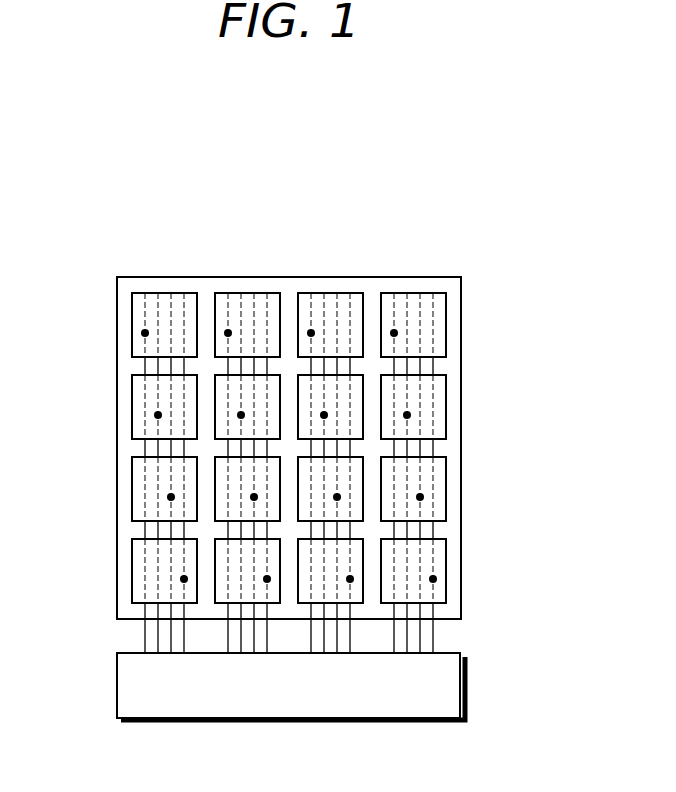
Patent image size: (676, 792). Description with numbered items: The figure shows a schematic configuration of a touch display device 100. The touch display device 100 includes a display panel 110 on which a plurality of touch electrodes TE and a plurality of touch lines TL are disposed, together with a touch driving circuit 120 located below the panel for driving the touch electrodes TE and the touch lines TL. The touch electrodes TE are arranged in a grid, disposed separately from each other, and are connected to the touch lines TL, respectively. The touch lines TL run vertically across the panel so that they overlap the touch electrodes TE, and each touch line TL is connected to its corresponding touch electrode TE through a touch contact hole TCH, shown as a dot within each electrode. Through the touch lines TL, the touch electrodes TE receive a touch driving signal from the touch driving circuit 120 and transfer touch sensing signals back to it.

The touch display device 100 is at (63, 187).
The display panel 110 is at (461, 315).
The touch driving circuit 120 is at (305, 697).
The touch electrode TE is at (446, 389).
The touch line TL is at (435, 628).
The touch contact hole TCH is at (143, 333).